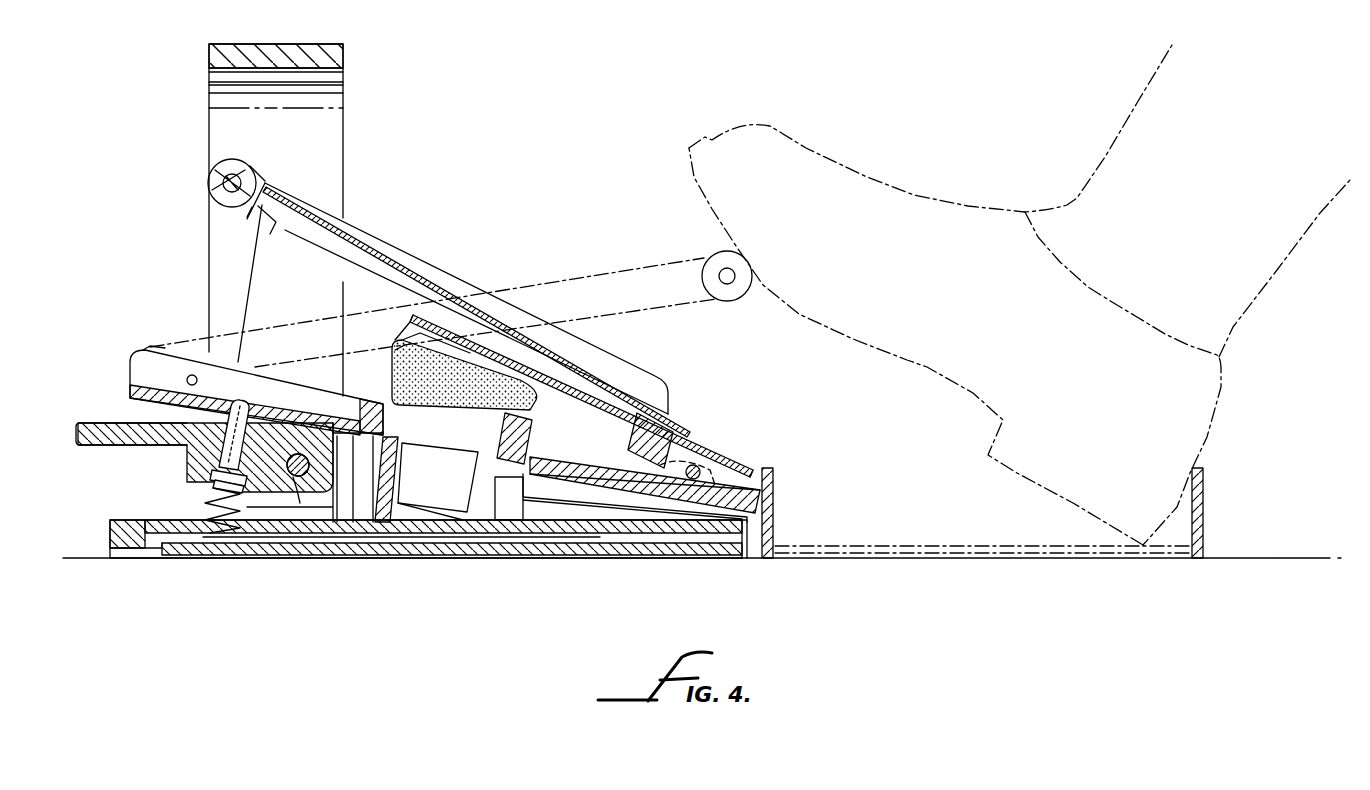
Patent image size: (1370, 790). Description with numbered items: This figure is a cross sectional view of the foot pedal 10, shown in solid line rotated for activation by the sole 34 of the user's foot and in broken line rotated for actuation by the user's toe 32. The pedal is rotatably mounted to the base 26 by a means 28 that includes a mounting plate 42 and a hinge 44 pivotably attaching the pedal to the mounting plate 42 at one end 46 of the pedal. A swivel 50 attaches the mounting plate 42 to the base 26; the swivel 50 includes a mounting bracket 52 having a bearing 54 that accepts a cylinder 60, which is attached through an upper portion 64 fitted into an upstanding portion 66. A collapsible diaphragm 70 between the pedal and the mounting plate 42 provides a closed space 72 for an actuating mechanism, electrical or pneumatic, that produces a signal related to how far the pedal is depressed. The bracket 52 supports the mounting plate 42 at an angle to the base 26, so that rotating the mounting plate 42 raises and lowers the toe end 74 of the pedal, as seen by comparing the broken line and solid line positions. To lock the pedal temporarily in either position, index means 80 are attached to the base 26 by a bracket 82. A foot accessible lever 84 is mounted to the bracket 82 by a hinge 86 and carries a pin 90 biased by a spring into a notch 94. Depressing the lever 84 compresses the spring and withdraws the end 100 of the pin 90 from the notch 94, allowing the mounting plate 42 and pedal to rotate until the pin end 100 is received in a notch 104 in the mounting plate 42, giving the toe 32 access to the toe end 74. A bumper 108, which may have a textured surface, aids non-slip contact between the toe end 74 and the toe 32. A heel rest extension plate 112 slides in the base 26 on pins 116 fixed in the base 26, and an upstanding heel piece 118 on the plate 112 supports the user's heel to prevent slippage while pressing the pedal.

The foot pedal 10 is at (472, 236).
The base 26 is at (128, 558).
The means for rotatably mounting the pedal 28 is at (532, 488).
The user's toe 32 is at (770, 124).
The sole of the user's foot 34 is at (853, 339).
The mounting plate 42 is at (577, 458).
The hinge 44 is at (660, 470).
The end of the pedal 46 is at (760, 467).
The swivel 50 is at (528, 509).
The mounting bracket 52 is at (380, 470).
The bearing 54 is at (368, 510).
The cylinder 60 is at (463, 520).
The upper portion 64 is at (517, 432).
The upstanding portion 66 is at (360, 400).
The collapsible diaphragm 70 is at (527, 408).
The closed space 72 is at (438, 477).
The toe end of the pedal 74 is at (277, 187).
The index means 80 is at (146, 460).
The bracket 82 is at (187, 485).
The foot accessible lever 84 is at (100, 423).
The hinge 86 is at (293, 477).
The pin 90 is at (238, 468).
The notch 94 is at (256, 390).
The end of the pin 100 is at (243, 400).
The notch in the mounting plate 104 is at (650, 496).
The bumper 108 is at (242, 165).
The heel rest extension plate 112 is at (973, 545).
The pins 116 is at (187, 500).
The heel piece 118 is at (775, 505).